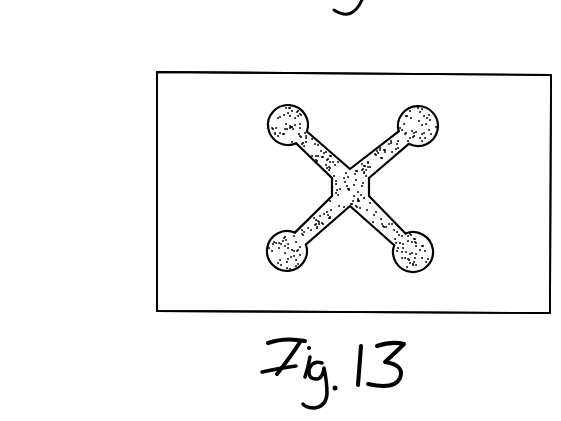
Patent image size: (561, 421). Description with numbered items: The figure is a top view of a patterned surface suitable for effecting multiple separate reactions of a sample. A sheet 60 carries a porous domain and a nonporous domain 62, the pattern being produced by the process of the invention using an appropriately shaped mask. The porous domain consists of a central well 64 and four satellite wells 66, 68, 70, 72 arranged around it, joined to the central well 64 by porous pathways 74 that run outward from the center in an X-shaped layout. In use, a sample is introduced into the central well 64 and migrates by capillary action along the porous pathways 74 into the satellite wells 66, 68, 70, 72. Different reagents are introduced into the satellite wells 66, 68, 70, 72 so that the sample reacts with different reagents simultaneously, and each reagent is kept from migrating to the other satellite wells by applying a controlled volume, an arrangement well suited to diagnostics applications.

The sheet 60 is at (182, 65).
The nonporous domain 62 is at (208, 193).
The central well 64 is at (335, 187).
The satellite well 66 is at (425, 127).
The satellite well 68 is at (427, 255).
The satellite well 70 is at (274, 252).
The satellite well 72 is at (282, 123).
The porous pathways 74 is at (378, 143).